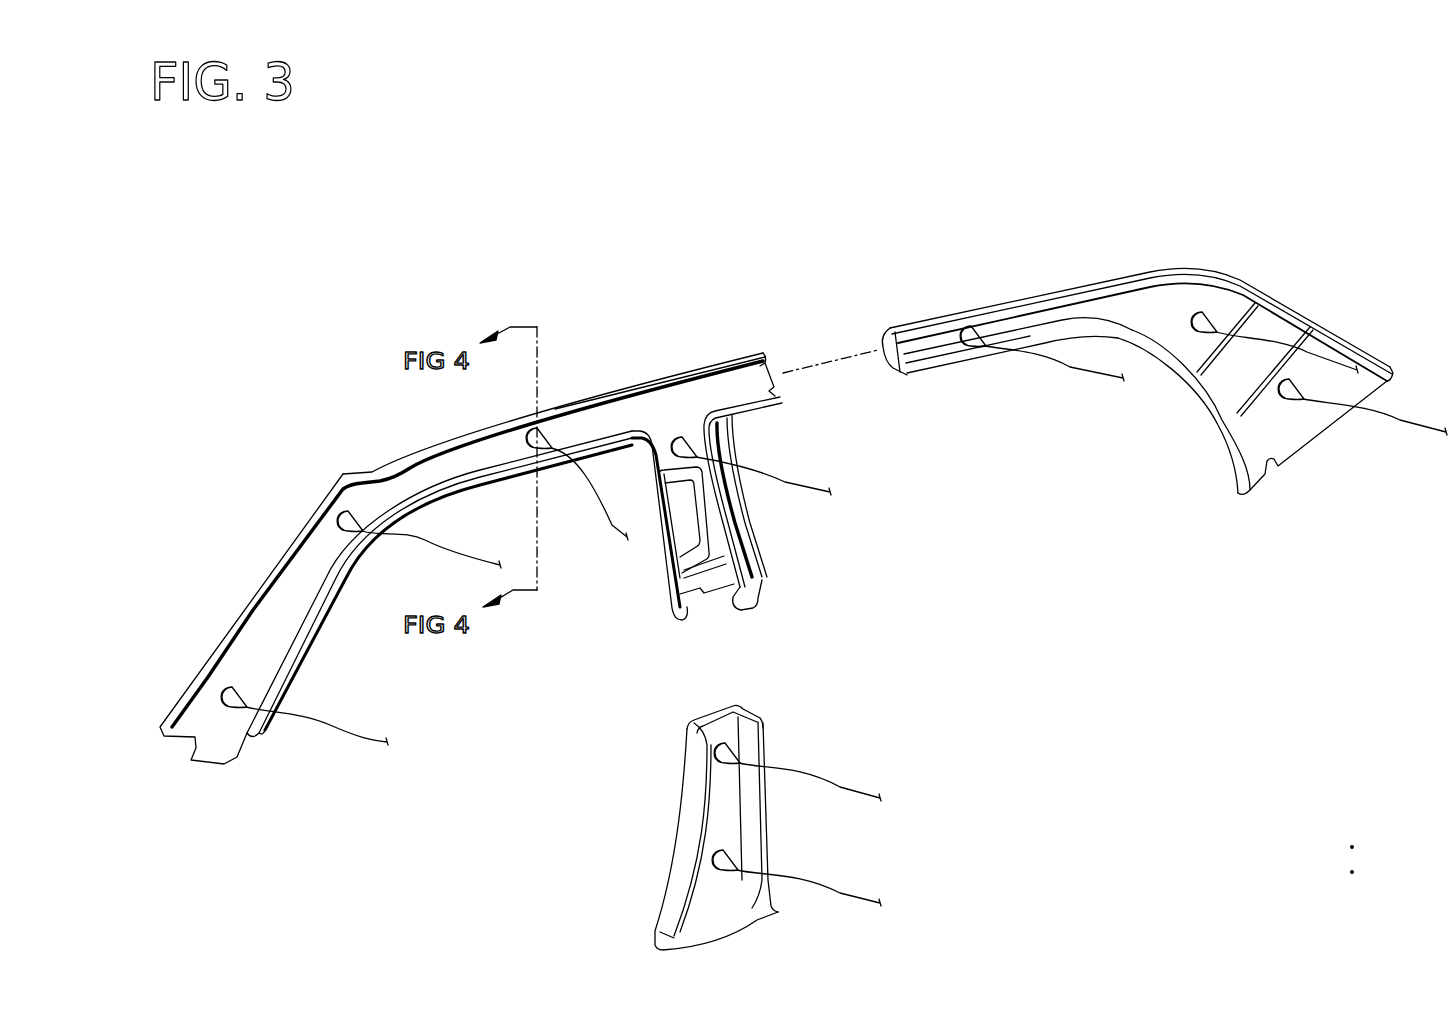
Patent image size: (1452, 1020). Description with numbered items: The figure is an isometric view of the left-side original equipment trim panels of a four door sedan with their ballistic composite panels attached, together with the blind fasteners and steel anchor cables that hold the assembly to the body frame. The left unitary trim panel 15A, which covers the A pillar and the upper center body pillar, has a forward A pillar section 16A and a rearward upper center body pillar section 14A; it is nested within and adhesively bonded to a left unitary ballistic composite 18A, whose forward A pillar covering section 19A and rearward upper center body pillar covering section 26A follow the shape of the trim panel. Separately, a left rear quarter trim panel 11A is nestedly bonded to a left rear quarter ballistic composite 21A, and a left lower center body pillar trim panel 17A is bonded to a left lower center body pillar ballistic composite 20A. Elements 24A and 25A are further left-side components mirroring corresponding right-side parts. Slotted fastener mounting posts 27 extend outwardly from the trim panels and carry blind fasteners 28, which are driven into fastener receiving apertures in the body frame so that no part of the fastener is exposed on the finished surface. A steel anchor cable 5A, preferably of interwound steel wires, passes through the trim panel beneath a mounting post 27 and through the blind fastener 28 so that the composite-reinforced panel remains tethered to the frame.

The roof side rail rear 5A is at (1067, 365).
The left OEM rear quarter trim panel 11A is at (1163, 317).
The center pillar 14A is at (730, 557).
The left OEM unitary A pillar and upper center body pillar trim panel 15A is at (440, 467).
The forward A pillar section 16A is at (273, 627).
The left OEM lower center body pillar trim panel 17A is at (727, 817).
The left unitary ballistic composite 18A is at (605, 397).
The forward A pillar covering section 19A is at (273, 573).
The left lower center body pillar ballistic composite 20A is at (690, 823).
The left rear quarter ballistic composite 21A is at (1101, 285).
The left-side component 24A is at (692, 523).
The left-side component 25A is at (677, 512).
The rearward upper center body pillar covering section 26A is at (737, 495).
The slotted fastener mounting post 27 is at (963, 326).
The blind fastener 28 is at (977, 345).